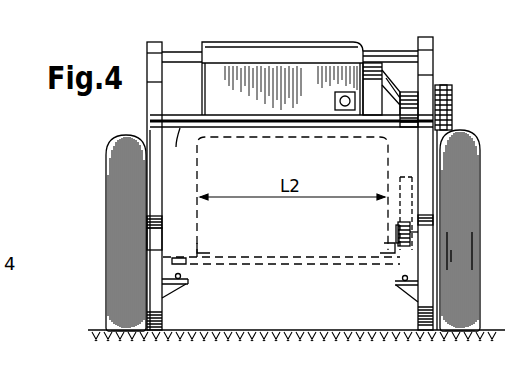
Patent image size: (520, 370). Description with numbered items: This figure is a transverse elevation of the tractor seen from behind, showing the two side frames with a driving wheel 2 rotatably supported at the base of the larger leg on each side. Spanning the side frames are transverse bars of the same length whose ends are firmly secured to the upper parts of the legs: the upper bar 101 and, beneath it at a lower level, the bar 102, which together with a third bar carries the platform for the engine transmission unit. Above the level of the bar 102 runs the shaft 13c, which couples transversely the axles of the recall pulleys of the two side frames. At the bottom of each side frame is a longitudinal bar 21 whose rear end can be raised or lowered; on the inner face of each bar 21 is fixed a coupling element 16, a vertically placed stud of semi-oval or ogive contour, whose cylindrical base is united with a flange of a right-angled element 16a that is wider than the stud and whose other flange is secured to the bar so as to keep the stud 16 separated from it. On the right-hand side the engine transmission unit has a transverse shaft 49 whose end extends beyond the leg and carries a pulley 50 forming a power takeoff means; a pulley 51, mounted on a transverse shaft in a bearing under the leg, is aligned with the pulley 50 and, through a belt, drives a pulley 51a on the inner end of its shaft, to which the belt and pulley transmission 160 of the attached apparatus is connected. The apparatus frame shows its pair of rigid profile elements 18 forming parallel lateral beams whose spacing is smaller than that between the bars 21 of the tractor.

The bar 101 is at (398, 51).
The bar 102 is at (173, 128).
The shaft 13c is at (179, 150).
The belt and pulley transmission 160 is at (388, 172).
The rigid profile element 18 is at (204, 247).
The pulley 51a is at (398, 229).
The coupling element 16 is at (188, 281).
The right-angled element 16a is at (170, 293).
The bar 21 is at (426, 309).
The driving wheel 2 is at (480, 187).
The transverse shaft 49 is at (454, 98).
The pulley 50 is at (454, 106).
The pulley 51 is at (455, 247).